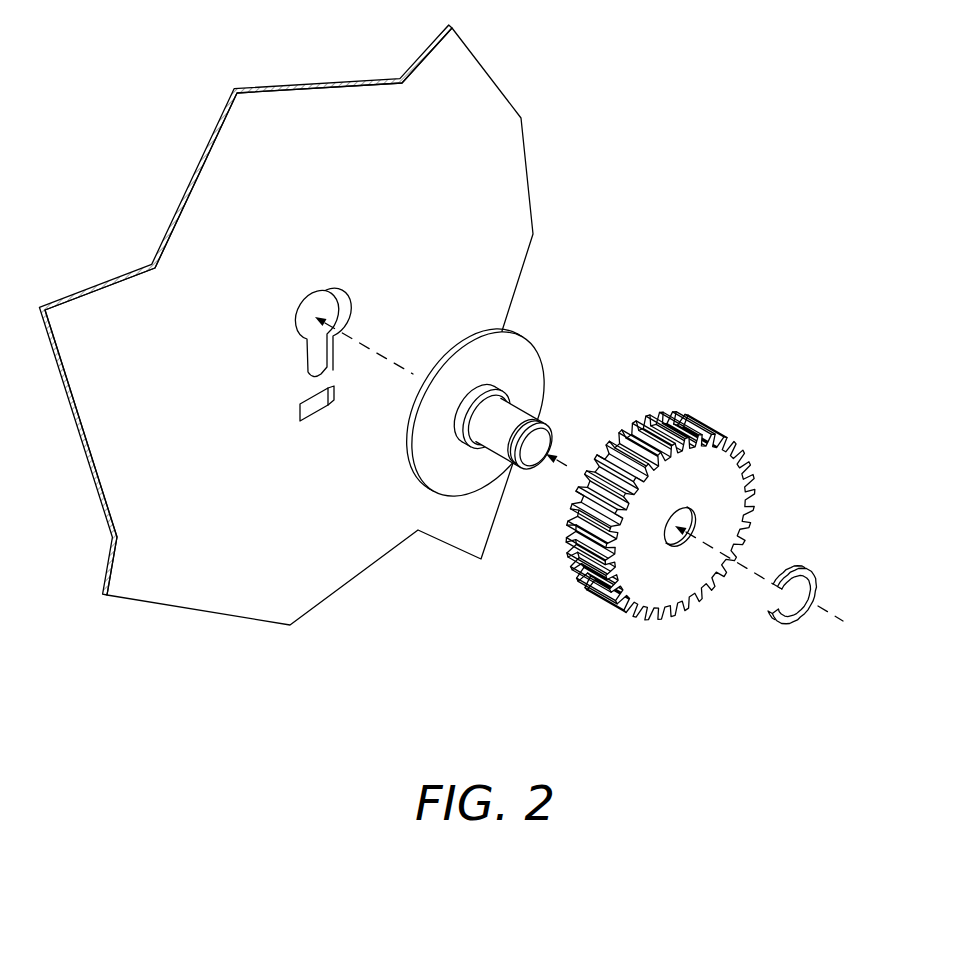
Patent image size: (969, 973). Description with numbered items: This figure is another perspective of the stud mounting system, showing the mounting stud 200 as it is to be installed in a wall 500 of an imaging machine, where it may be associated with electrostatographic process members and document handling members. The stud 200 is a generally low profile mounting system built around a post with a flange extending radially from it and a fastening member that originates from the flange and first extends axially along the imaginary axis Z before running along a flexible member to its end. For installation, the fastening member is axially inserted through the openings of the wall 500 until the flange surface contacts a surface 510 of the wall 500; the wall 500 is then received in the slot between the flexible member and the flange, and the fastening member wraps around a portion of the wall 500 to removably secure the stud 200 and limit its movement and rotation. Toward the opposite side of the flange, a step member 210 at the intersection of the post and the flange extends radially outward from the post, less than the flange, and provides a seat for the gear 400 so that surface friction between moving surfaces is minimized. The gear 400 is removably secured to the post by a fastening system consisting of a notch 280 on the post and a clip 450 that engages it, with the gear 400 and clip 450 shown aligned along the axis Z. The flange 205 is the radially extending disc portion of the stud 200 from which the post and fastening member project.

The wall 500 is at (313, 321).
The surface 510 is at (513, 167).
The mounting stud 200 is at (507, 426).
The flange disc 205 is at (458, 475).
The step member 210 is at (522, 380).
The notch 280 is at (540, 422).
The gear 400 is at (752, 468).
The clip 450 is at (809, 571).
The imaginary axis Z is at (586, 479).